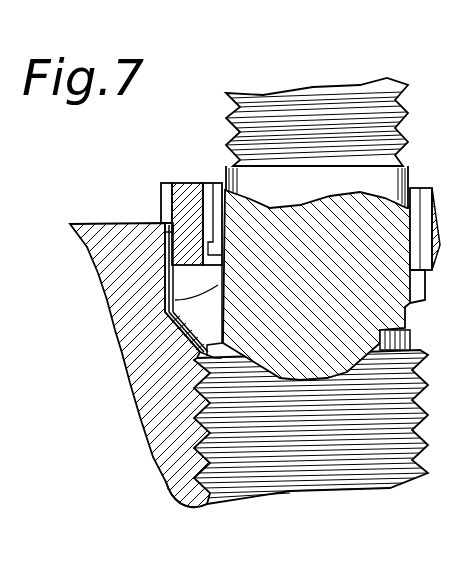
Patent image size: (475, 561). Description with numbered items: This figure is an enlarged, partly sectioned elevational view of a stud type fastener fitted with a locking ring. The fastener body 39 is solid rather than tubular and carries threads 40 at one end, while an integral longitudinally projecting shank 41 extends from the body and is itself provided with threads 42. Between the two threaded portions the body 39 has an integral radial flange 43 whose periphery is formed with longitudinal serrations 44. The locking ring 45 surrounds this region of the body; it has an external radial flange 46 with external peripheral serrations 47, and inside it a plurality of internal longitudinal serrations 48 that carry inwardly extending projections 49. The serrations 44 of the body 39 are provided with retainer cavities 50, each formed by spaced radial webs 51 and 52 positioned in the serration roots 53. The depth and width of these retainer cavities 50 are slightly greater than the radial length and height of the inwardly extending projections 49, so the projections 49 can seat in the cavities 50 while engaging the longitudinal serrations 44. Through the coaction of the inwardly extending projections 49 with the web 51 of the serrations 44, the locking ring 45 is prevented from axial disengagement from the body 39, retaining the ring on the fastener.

The fastener body 39 is at (140, 402).
The threads 40 is at (170, 493).
The shank 41 is at (411, 172).
The threads 42 is at (231, 112).
The radial flange 43 is at (128, 378).
The longitudinal peripheral serrations 44 is at (426, 290).
The locking ring 45 is at (93, 222).
The external radial flange 46 is at (190, 183).
The external peripheral serrations 47 is at (162, 187).
The internal longitudinal serrations 48 is at (212, 183).
The inwardly extending projections 49 is at (165, 265).
The retainer cavities 50 is at (176, 302).
The radial web 51 is at (165, 232).
The radial web 52 is at (172, 332).
The serration roots 53 is at (433, 232).